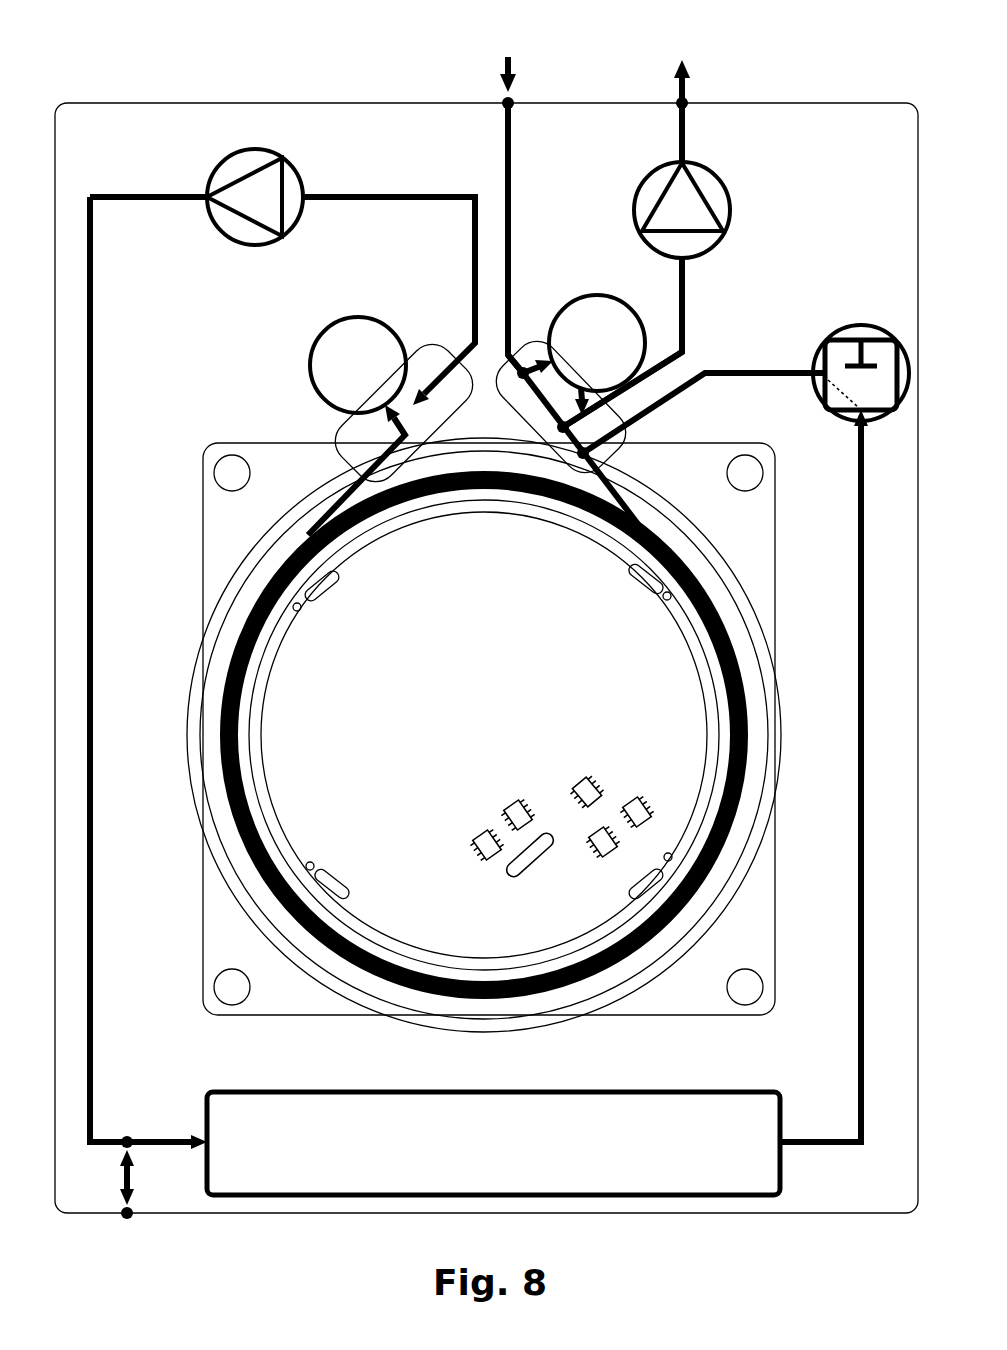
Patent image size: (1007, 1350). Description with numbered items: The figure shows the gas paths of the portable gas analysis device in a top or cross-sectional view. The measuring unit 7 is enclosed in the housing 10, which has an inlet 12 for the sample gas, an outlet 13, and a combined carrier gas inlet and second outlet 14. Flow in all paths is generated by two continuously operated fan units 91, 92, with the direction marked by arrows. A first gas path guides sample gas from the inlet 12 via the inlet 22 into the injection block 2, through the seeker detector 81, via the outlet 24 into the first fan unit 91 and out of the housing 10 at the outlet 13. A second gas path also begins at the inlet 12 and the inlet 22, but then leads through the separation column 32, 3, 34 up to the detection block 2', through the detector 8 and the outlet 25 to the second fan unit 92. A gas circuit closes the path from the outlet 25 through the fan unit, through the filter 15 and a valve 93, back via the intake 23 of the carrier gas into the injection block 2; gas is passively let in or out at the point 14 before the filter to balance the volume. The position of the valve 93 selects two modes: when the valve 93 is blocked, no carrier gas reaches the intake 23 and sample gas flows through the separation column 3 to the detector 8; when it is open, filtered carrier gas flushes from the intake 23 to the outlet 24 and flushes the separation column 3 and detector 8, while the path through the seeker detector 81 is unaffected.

The housing 10 is at (72, 104).
The inlet 12 is at (508, 198).
The outlet 13 is at (632, 225).
The second fan unit 92 is at (255, 197).
The first fan unit 91 is at (682, 210).
The seeker detector 81 is at (597, 343).
The valve 93 is at (835, 340).
The detector 8 is at (312, 340).
The outlet 25 is at (450, 345).
The inlet 22 is at (510, 360).
The outlet 24 is at (622, 395).
The intake 23 is at (632, 430).
The measuring unit 7 is at (218, 520).
The separation column section 34 is at (370, 475).
The detection block 2' is at (404, 457).
The injection block 2 is at (539, 439).
The separation column section 32 is at (573, 495).
The separation column 3 is at (745, 690).
The filter 15 is at (207, 1120).
The combined carrier gas inlet and second outlet 14 is at (133, 1218).